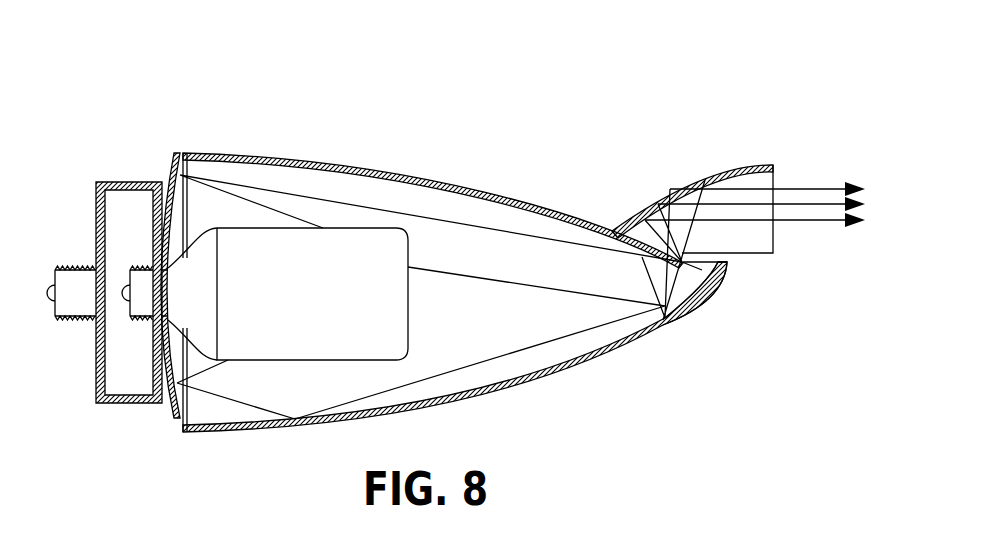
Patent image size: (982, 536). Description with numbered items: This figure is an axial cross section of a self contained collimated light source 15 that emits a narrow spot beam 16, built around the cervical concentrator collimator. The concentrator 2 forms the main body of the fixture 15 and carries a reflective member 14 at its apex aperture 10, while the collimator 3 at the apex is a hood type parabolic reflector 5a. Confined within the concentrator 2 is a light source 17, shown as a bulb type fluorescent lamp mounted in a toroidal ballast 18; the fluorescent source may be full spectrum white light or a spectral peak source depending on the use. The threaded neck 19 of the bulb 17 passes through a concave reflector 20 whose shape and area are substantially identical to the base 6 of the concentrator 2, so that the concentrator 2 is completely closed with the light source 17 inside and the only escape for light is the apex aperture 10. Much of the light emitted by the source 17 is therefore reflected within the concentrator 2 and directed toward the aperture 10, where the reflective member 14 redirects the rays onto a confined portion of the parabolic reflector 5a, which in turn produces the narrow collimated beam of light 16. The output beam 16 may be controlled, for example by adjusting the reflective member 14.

The concentrator 2 is at (290, 138).
The collimator 3 is at (666, 185).
The parabolic reflector 5a is at (722, 174).
The base of the concentrator 6 is at (194, 178).
The apex aperture 10 is at (702, 270).
The reflective member 14 is at (717, 289).
The self contained collimated light source 15 is at (440, 112).
The narrow spot beam 16 is at (825, 174).
The light source 17 is at (327, 308).
The toroidal ballast 18 is at (120, 202).
The threaded neck 19 is at (141, 266).
The concave reflector 20 is at (174, 183).